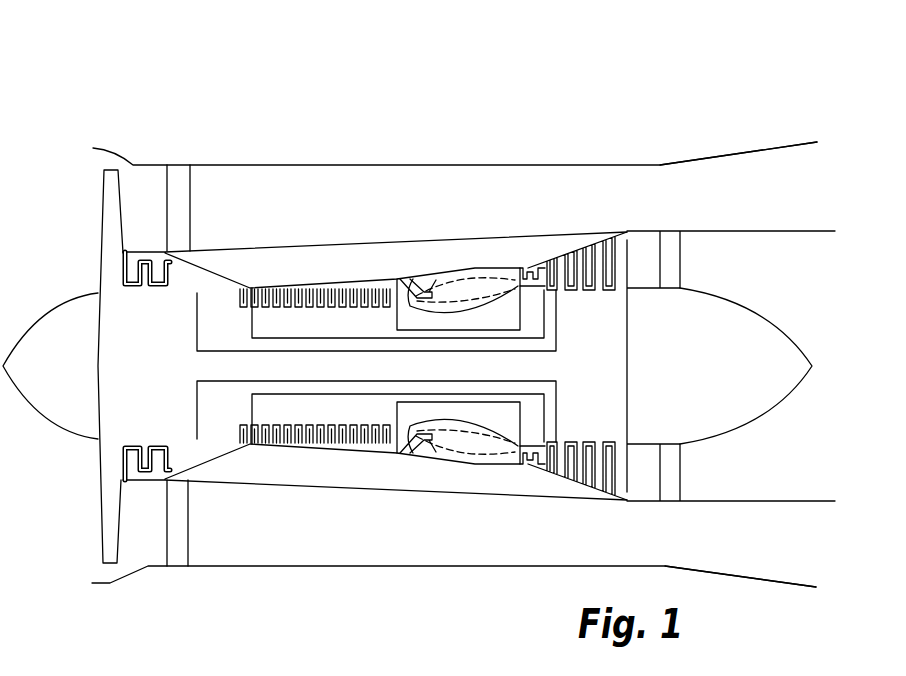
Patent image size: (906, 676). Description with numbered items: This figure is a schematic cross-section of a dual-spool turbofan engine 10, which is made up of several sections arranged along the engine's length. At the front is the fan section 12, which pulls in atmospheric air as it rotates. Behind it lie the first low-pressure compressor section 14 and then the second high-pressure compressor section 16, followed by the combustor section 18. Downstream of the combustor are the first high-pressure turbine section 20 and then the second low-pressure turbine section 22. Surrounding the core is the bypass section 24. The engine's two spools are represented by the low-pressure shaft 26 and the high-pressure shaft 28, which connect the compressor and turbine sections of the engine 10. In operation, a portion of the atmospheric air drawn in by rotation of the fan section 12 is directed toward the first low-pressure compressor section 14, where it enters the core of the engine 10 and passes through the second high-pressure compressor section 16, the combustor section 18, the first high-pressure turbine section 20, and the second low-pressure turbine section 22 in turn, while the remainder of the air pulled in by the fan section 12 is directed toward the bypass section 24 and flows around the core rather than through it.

The turbofan engine 10 is at (762, 82).
The fan section 12 is at (97, 275).
The first low-pressure compressor section 14 is at (143, 248).
The second high-pressure compressor section 16 is at (297, 287).
The combustor section 18 is at (469, 266).
The first high-pressure turbine section 20 is at (534, 266).
The second low-pressure turbine section 22 is at (576, 246).
The bypass section 24 is at (663, 191).
The low-pressure shaft 26 is at (213, 353).
The high-pressure shaft 28 is at (253, 412).